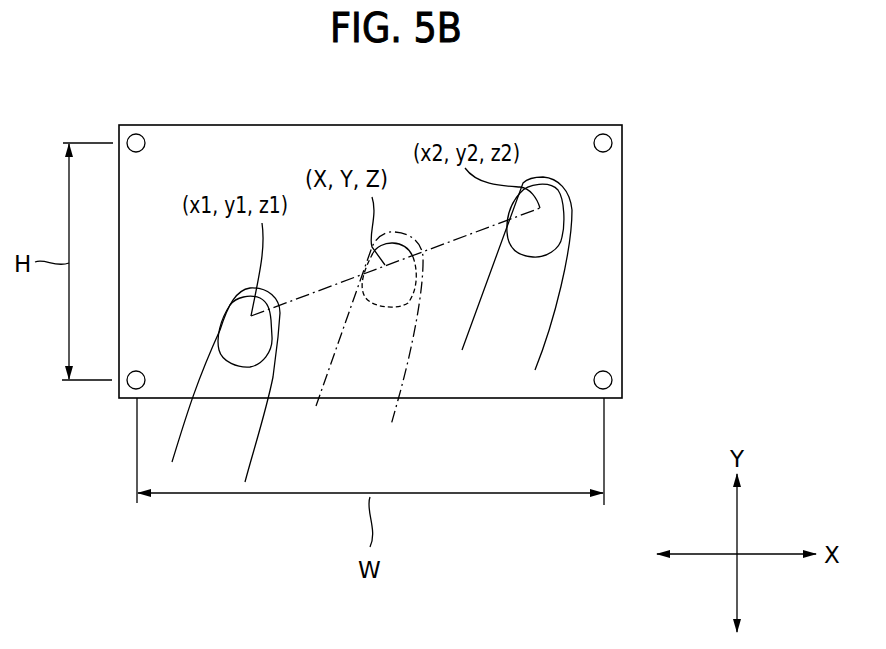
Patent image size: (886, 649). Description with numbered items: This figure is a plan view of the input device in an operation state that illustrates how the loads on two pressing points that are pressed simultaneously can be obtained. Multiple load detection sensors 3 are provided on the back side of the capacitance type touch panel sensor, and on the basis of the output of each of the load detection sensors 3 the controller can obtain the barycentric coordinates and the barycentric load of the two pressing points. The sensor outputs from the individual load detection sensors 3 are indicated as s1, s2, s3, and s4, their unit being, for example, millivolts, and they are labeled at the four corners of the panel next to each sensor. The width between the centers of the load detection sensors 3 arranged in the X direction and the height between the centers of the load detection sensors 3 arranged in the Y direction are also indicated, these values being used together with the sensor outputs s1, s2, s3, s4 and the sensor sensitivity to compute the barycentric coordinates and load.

The load detection sensor 3 is at (390, 242).
The sensor output s1 is at (135, 143).
The sensor output s2 is at (602, 143).
The sensor output s3 is at (607, 380).
The sensor output s4 is at (134, 383).